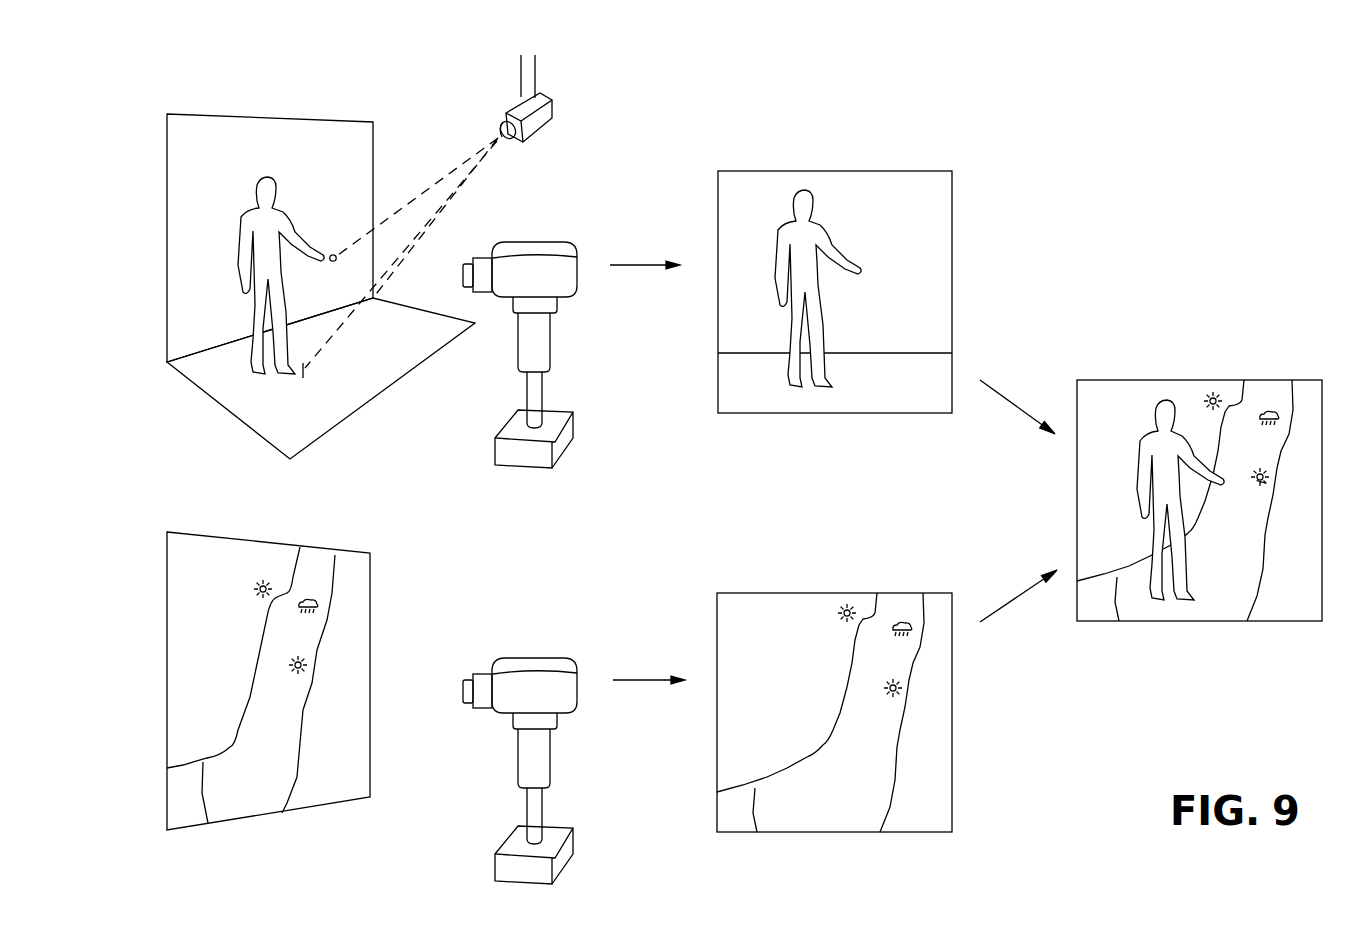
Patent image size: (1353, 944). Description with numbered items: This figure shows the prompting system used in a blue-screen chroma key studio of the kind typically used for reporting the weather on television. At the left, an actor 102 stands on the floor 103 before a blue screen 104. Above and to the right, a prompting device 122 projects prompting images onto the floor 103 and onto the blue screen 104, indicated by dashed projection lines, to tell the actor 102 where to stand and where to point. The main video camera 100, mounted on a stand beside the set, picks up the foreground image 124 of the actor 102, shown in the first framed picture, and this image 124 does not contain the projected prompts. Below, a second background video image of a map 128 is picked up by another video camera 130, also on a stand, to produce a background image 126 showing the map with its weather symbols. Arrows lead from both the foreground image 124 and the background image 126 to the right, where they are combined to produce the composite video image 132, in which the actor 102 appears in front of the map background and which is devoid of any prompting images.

The main video camera 100 is at (535, 241).
The actor 102 is at (243, 213).
The floor 103 is at (376, 378).
The blue screen 104 is at (307, 121).
The prompting device 122 is at (555, 107).
The image 124 is at (849, 149).
The background image 126 is at (810, 572).
The map 128 is at (390, 591).
The video camera 130 is at (520, 746).
The composite video image 132 is at (1186, 356).